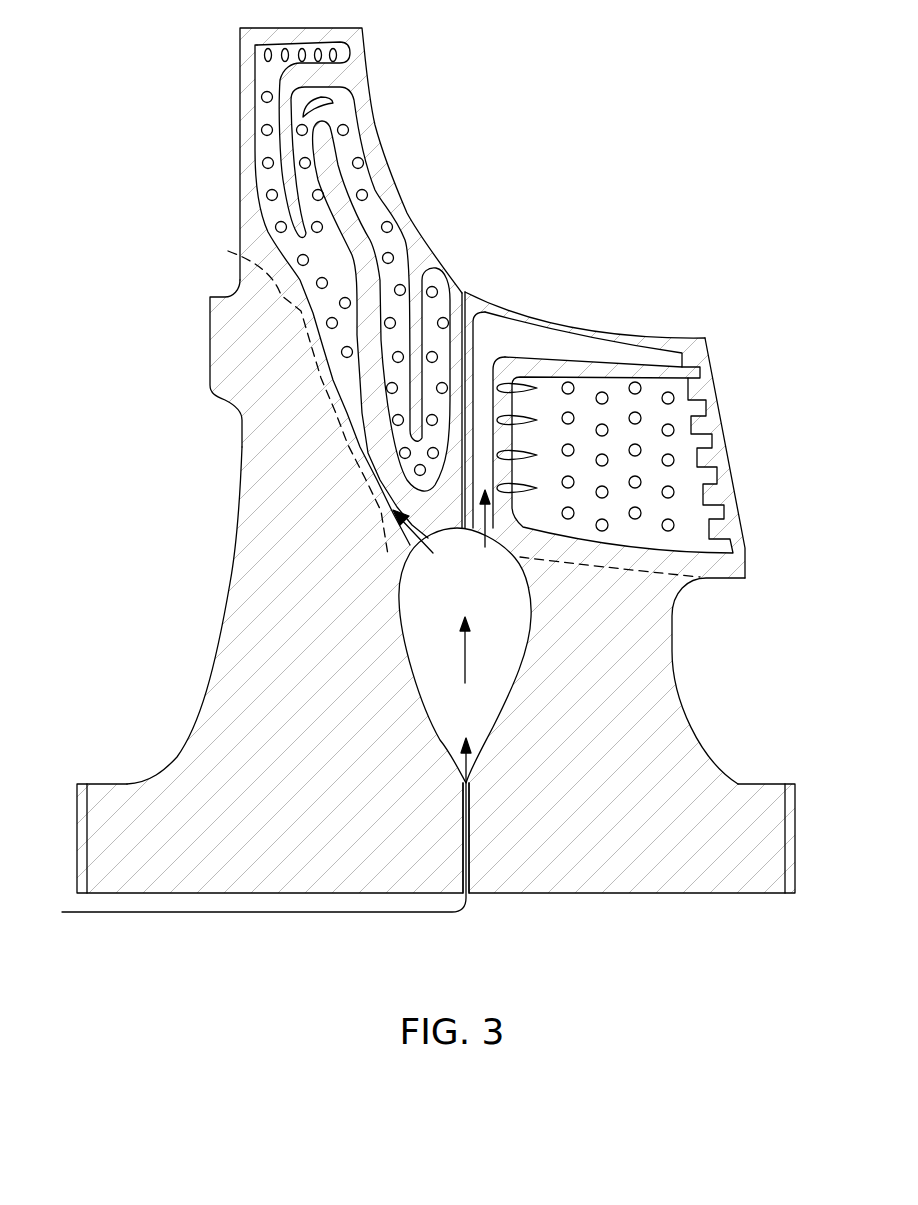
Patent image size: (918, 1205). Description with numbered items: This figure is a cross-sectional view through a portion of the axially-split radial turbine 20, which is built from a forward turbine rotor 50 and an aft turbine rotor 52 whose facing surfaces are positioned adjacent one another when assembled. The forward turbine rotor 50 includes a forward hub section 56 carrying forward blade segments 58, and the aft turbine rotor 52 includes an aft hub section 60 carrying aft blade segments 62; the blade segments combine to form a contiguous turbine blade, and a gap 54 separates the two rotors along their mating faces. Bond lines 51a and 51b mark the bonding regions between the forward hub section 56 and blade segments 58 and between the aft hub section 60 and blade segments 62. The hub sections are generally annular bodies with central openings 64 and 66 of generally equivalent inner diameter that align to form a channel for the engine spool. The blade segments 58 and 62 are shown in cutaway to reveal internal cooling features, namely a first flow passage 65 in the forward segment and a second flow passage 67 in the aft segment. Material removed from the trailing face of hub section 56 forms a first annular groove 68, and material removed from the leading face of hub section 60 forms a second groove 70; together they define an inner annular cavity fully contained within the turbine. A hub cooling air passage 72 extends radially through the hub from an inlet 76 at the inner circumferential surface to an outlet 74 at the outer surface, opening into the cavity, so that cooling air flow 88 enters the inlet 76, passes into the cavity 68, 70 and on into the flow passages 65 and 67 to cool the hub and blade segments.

The radial turbine 20 is at (627, 158).
The forward turbine rotor 50 is at (75, 920).
The aft turbine rotor 52 is at (469, 920).
The bond line 51a is at (362, 510).
The bond line 51b is at (610, 572).
The gap between vane portions 54 is at (473, 293).
The forward hub section 56 is at (231, 584).
The forward blade segments 58 is at (240, 92).
The aft hub section 60 is at (682, 687).
The aft blade segments 62 is at (724, 422).
The central opening 64 is at (277, 907).
The first flow passage 65 is at (377, 205).
The central opening 66 is at (590, 907).
The second flow passage 67 is at (593, 350).
The first annular groove 68 is at (414, 607).
The second annular groove 70 is at (511, 607).
The hub cooling air passage 72 is at (461, 826).
The outlet 74 is at (471, 784).
The inlet 76 is at (472, 892).
The cooling air flow 88 is at (62, 912).